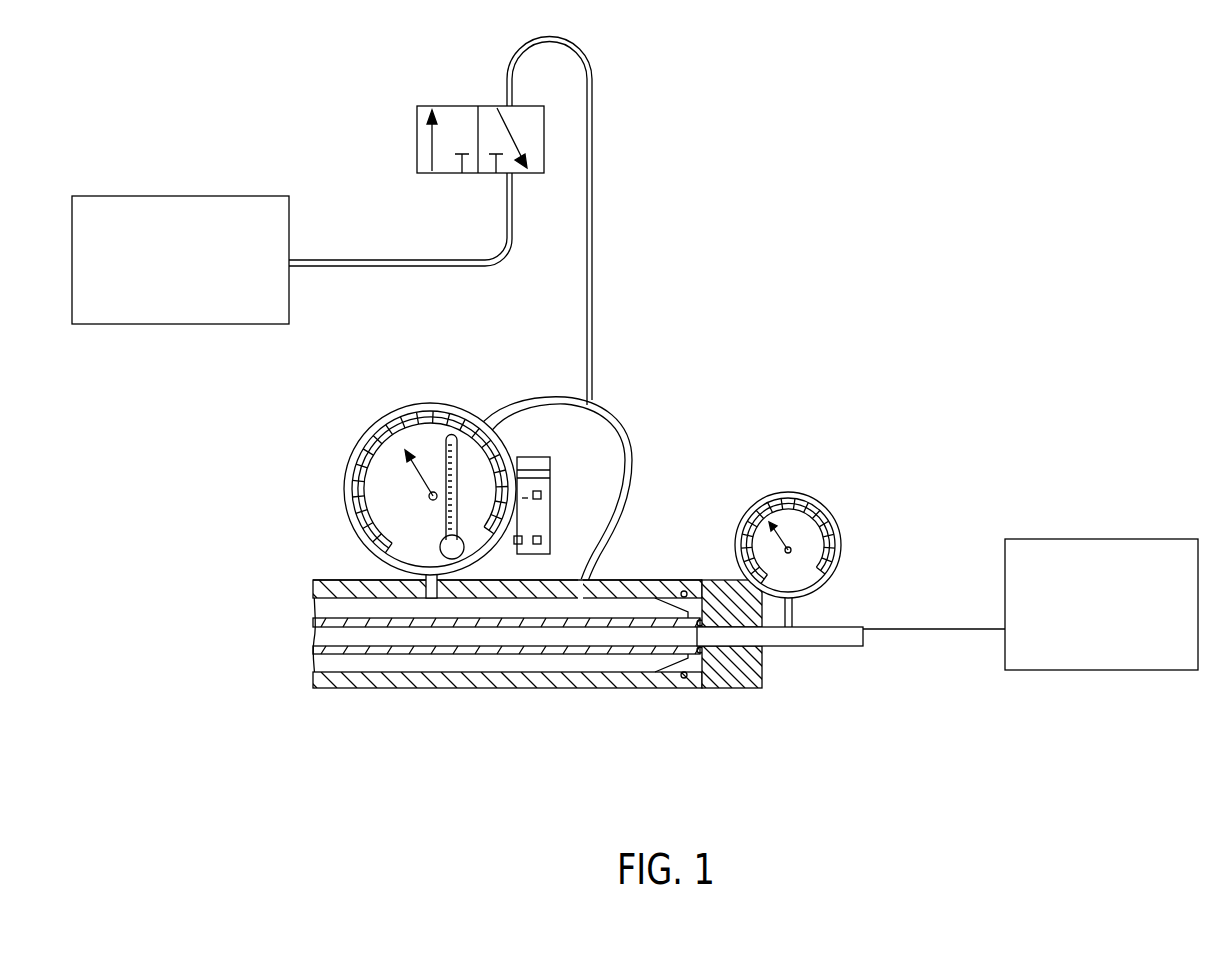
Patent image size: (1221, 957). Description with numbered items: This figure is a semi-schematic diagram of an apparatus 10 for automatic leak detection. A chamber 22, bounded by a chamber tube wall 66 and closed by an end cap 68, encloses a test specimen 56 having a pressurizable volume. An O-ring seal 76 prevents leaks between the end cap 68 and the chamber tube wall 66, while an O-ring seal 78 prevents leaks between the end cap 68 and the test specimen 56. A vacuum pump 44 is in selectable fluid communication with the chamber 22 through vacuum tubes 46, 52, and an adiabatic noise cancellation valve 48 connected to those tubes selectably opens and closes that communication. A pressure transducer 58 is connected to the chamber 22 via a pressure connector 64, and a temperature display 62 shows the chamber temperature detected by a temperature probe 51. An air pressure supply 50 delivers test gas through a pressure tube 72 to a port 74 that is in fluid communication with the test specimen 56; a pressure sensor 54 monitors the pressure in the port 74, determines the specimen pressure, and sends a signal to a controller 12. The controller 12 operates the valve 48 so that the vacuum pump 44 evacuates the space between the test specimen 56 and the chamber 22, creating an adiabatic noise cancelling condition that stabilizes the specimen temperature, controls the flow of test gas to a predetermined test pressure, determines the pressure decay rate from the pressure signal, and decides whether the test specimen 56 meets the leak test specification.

The apparatus for automatic leak detection 10 is at (821, 133).
The controller 12 is at (552, 486).
The chamber 22 is at (702, 690).
The vacuum pump 44 is at (183, 324).
The vacuum tube 46 is at (497, 256).
The adiabatic noise cancellation valve 48 is at (478, 106).
The air pressure supply 50 is at (1096, 622).
The temperature probe 51 is at (424, 580).
The vacuum tube 52 is at (594, 176).
The pressure sensor 54 is at (812, 497).
The test specimen 56 is at (356, 652).
The pressure transducer 58 is at (411, 403).
The temperature display 62 is at (460, 463).
The pressure connector 64 is at (584, 548).
The chamber tube wall 66 is at (608, 582).
The end cap 68 is at (706, 585).
The pressure tube 72 is at (890, 628).
The port 74 is at (843, 636).
The O-ring seal 76 is at (686, 586).
The O-ring seal 78 is at (735, 660).